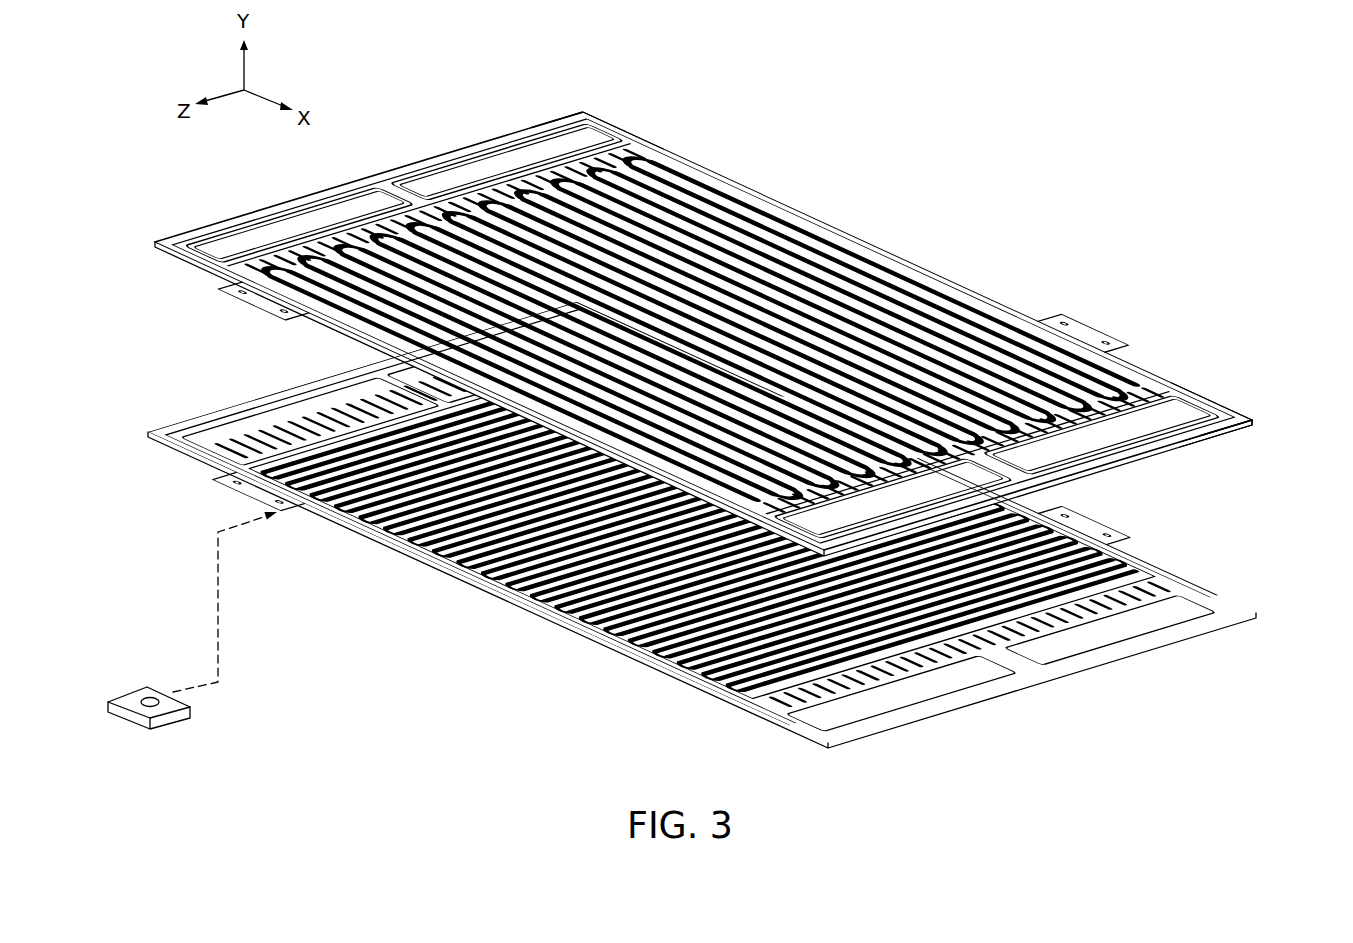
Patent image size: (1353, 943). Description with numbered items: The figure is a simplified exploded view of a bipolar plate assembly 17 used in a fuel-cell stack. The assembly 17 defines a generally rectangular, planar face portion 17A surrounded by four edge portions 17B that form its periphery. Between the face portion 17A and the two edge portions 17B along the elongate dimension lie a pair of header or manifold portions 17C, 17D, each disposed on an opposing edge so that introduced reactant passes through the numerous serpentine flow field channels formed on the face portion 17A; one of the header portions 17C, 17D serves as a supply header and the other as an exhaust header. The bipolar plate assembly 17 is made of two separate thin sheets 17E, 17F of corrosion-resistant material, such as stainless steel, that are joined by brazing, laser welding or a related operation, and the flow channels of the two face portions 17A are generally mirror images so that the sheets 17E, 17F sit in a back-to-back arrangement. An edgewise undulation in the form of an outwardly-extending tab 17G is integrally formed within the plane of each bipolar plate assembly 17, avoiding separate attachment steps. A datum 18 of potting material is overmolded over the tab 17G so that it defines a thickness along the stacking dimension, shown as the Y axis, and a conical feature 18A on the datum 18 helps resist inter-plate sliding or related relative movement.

The bipolar plate assembly 17 is at (128, 207).
The face portion 17A is at (698, 297).
The edge portions 17B is at (511, 132).
The header portion 17C is at (633, 127).
The header portion 17D is at (1208, 394).
The sheet 17E is at (1201, 380).
The sheet 17F is at (1233, 592).
The tab 17G is at (1080, 322).
The datum 18 is at (130, 712).
The conical feature 18A is at (145, 697).